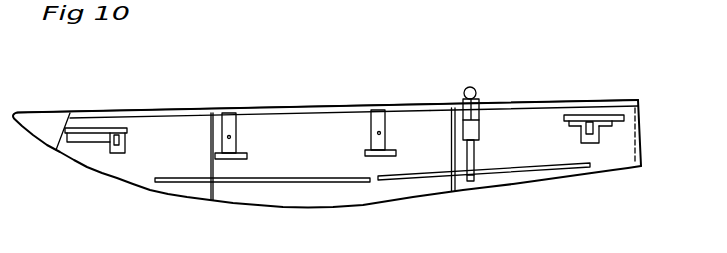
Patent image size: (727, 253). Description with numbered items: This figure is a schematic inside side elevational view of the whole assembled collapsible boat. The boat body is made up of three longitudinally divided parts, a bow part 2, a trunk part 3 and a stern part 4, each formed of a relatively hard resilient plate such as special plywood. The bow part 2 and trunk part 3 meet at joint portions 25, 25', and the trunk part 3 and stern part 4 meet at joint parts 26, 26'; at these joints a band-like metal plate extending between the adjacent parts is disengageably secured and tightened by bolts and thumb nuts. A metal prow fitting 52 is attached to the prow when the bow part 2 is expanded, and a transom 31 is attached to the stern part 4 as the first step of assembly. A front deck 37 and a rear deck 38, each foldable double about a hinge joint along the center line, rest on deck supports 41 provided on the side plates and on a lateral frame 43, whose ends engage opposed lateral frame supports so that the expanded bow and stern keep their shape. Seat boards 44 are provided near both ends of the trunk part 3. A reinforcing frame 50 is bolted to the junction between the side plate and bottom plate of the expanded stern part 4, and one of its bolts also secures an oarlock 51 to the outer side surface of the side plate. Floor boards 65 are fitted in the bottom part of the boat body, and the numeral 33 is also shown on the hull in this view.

The hull 33 is at (327, 104).
The transom 31 is at (642, 133).
The metal prow fitting 52 is at (42, 124).
The bow part 2 is at (142, 110).
The trunk part 3 is at (295, 104).
The stern part 4 is at (517, 100).
The front deck 37 is at (98, 128).
The rear deck 38 is at (600, 115).
The deck support 41 is at (88, 140).
The lateral frame 43 is at (117, 153).
The seat board 44 is at (238, 148).
The joint portion 25 is at (205, 179).
The joint portion 25' is at (174, 177).
The joint part 26 is at (435, 174).
The joint part 26' is at (439, 115).
The oarlock 51 is at (469, 86).
The reinforcing frame 50 is at (477, 154).
The floor boards 65 is at (284, 183).